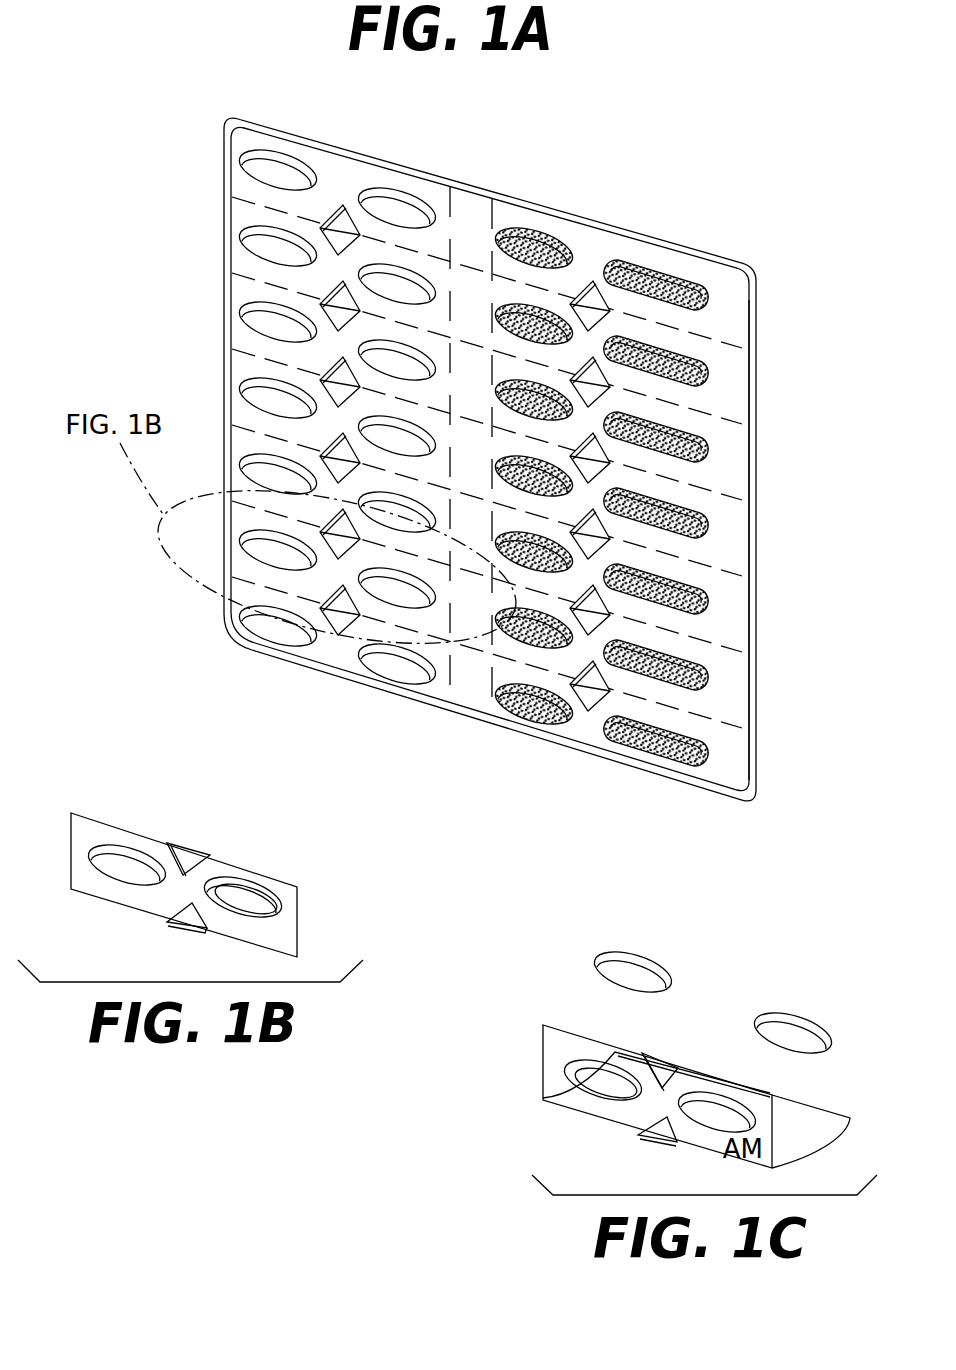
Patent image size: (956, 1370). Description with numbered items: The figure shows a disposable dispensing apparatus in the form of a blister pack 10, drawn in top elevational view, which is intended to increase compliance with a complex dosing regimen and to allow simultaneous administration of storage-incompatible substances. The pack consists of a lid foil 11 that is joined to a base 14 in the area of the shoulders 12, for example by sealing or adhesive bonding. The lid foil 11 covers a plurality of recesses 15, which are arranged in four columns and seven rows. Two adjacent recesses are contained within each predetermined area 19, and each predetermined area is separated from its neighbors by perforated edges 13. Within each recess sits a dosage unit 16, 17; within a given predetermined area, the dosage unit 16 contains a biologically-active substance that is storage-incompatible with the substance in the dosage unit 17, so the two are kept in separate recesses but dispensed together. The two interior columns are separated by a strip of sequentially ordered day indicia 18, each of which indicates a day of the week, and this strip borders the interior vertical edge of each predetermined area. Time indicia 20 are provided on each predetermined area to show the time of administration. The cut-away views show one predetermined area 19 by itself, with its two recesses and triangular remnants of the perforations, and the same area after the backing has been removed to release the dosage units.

In FIG. 1A, the blister pack 10 is at (750, 276).
In FIG. 1A, the lid foil 11 is at (350, 175).
In FIG. 1A, the shoulders 12 is at (738, 337).
In FIG. 1A, the perforated edges 13 is at (733, 508).
In FIG. 1A, the base 14 is at (742, 310).
In FIG. 1A, the recesses 15 is at (273, 263).
In FIG. 1A, the dosage unit 16 is at (317, 175).
In FIG. 1A, the dosage unit 17 is at (407, 190).
In FIG. 1A, the strip of sequentially ordered day indicia 18 is at (467, 711).
In FIG. 1A, the predetermined area 19 is at (728, 604).
In FIG. 1B, the predetermined area 19 is at (285, 890).
In FIG. 1A, the time indicia 20 is at (722, 310).